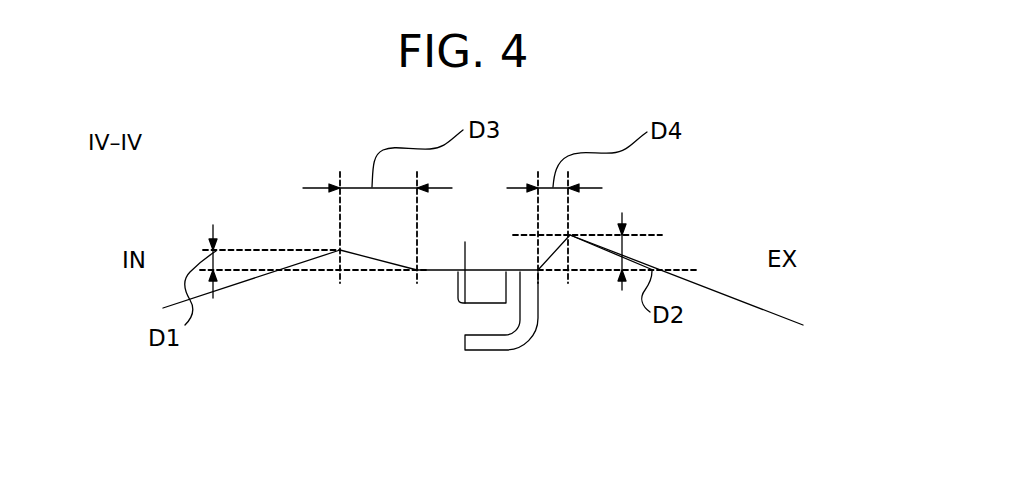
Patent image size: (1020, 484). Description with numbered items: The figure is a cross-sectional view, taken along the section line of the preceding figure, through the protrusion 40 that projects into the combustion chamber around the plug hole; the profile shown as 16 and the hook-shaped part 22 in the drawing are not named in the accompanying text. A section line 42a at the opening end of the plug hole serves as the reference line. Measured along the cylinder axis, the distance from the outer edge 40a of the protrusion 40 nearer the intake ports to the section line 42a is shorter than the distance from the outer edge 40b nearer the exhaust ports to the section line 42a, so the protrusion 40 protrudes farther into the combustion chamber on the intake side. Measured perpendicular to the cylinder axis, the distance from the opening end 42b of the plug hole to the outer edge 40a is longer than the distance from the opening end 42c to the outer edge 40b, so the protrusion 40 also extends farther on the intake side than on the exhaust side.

The cylinder head wall 16 is at (733, 298).
The valve 22 is at (530, 358).
The protrusion 40 is at (465, 303).
The outer edge of the protrusion closer to the intake ports 40a is at (340, 250).
The outer edge of the protrusion closer to the exhaust ports 40b is at (570, 235).
The section line of the opening end of the plug hole 42a is at (432, 272).
The opening end of the plug hole 42b is at (417, 271).
The opening end of the plug hole 42c is at (540, 271).